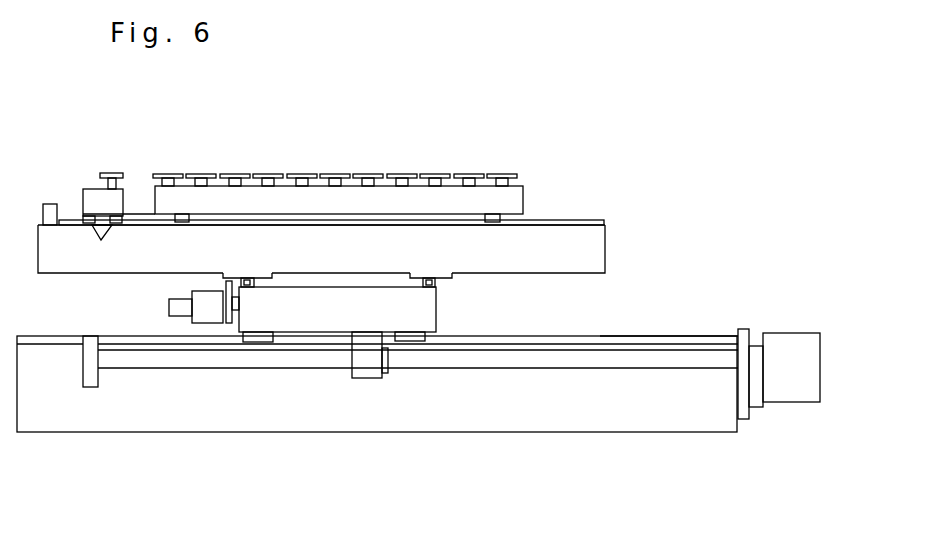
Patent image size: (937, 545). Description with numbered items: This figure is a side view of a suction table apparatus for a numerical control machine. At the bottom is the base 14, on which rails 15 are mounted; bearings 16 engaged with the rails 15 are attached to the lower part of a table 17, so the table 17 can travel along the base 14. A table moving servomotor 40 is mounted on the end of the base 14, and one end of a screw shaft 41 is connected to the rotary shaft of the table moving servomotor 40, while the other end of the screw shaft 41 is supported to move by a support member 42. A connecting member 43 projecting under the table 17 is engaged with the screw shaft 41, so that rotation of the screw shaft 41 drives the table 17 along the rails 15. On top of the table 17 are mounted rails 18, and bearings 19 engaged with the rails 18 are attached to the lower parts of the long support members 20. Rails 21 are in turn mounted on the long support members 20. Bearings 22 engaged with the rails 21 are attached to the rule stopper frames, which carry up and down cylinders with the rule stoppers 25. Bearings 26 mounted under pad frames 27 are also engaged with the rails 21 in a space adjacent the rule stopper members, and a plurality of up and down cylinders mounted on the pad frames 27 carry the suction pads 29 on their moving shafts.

The base 14 is at (631, 422).
The rails 15 is at (669, 335).
The bearings 16 is at (255, 342).
The table 17 is at (436, 309).
The rails 18 is at (248, 288).
The bearings 19 is at (247, 278).
The long support members 20 is at (592, 239).
The rails 21 is at (587, 220).
The bearings 22 is at (102, 246).
The rule stoppers 25 is at (113, 173).
The bearings 26 is at (181, 227).
The pad frames 27 is at (319, 196).
The suction pads 29 is at (233, 176).
The table moving servomotor 40 is at (820, 363).
The screw shaft 41 is at (520, 357).
The support member 42 is at (91, 378).
The connecting member 43 is at (362, 367).